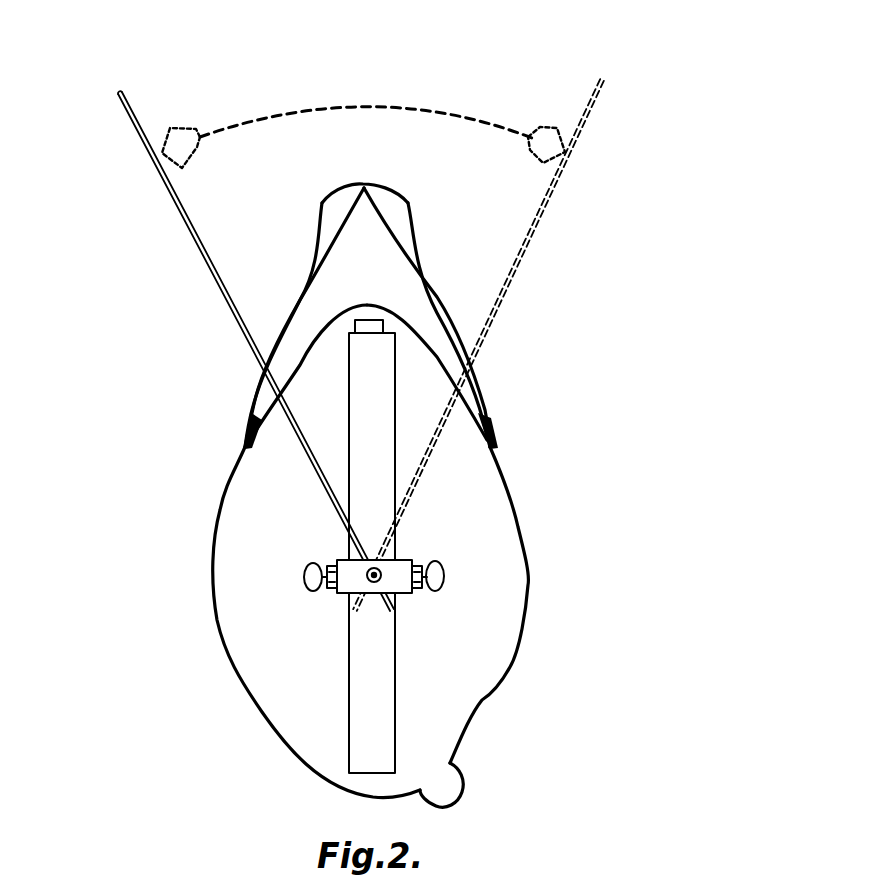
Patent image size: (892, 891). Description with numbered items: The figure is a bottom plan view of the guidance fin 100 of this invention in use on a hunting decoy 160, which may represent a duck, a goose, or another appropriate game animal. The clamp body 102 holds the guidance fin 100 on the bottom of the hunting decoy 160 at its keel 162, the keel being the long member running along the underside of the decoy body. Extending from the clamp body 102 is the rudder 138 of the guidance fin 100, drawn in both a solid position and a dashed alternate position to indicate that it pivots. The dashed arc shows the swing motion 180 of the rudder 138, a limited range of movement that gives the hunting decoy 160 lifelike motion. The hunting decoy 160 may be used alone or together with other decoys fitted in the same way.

The guidance fin 100 is at (298, 546).
The clamp body 102 is at (325, 614).
The rudder 138 is at (189, 223).
The hunting decoy 160 is at (513, 527).
The keel 162 is at (377, 678).
The swing motion 180 is at (380, 104).